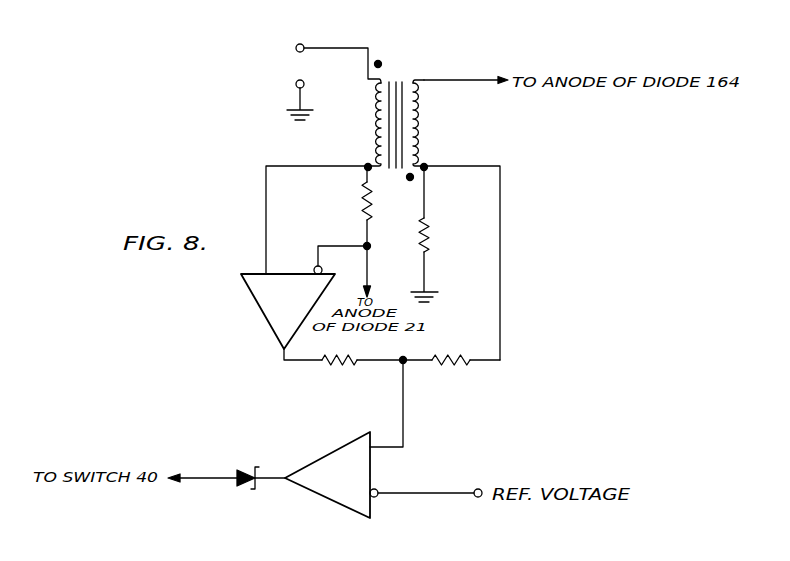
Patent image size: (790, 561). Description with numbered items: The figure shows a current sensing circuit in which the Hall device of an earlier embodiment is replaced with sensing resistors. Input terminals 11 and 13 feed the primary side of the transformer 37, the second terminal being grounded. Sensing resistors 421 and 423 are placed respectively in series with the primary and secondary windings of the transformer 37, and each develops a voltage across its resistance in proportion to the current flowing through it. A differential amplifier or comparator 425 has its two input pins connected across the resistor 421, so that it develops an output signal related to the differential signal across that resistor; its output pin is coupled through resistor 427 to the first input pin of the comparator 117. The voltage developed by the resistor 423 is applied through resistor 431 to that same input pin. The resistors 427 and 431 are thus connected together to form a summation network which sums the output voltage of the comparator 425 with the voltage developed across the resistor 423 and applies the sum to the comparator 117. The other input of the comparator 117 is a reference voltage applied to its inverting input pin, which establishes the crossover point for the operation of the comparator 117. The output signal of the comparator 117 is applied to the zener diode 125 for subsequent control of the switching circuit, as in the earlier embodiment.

The input terminal 11 is at (302, 44).
The grounded terminal 13 is at (305, 82).
The transformer 37 is at (400, 73).
The sensing resistor 421 is at (363, 188).
The sensing resistor 423 is at (428, 218).
The differential amplifier or comparator 425 is at (265, 307).
The resistor 427 is at (332, 363).
The resistor 431 is at (448, 370).
The zener diode 125 is at (257, 465).
The comparator 117 is at (335, 503).